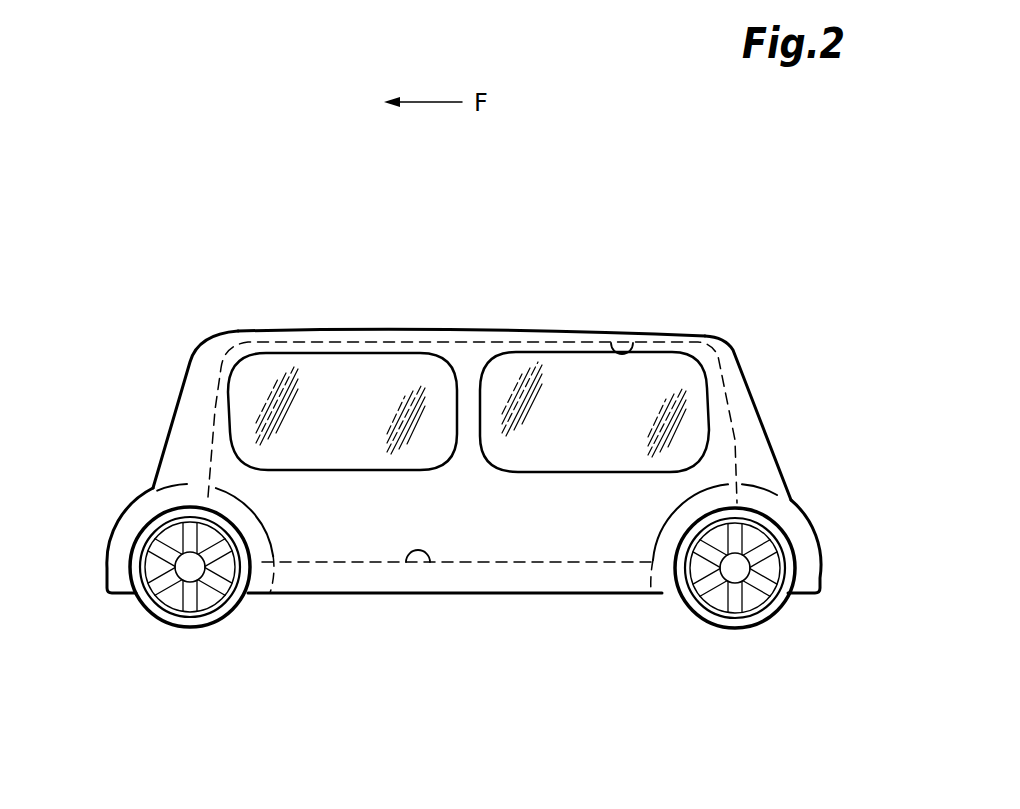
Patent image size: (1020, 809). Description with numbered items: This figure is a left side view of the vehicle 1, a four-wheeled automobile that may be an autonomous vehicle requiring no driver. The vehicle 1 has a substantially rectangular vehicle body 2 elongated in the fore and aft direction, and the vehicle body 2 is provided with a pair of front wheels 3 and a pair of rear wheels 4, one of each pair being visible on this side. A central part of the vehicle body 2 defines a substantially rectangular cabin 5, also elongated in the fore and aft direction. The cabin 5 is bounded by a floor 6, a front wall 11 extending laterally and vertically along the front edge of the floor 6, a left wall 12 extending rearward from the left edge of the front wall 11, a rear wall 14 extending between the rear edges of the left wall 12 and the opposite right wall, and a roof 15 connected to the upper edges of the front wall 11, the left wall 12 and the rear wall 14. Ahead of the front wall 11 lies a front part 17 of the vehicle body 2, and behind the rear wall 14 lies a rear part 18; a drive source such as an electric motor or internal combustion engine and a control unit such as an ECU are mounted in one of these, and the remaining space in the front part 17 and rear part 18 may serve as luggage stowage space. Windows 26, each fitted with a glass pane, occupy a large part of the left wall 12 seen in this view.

The vehicle 1 is at (687, 243).
The vehicle body 2 is at (738, 331).
The front wheels 3 is at (206, 622).
The rear wheels 4 is at (749, 622).
The cabin 5 is at (631, 340).
The floor 6 is at (407, 562).
The front wall 11 is at (183, 391).
The left wall 12 is at (498, 525).
The rear wall 14 is at (780, 431).
The roof 15 is at (494, 330).
The front part 17 is at (121, 519).
The rear part 18 is at (806, 528).
The windows 26 is at (346, 372).